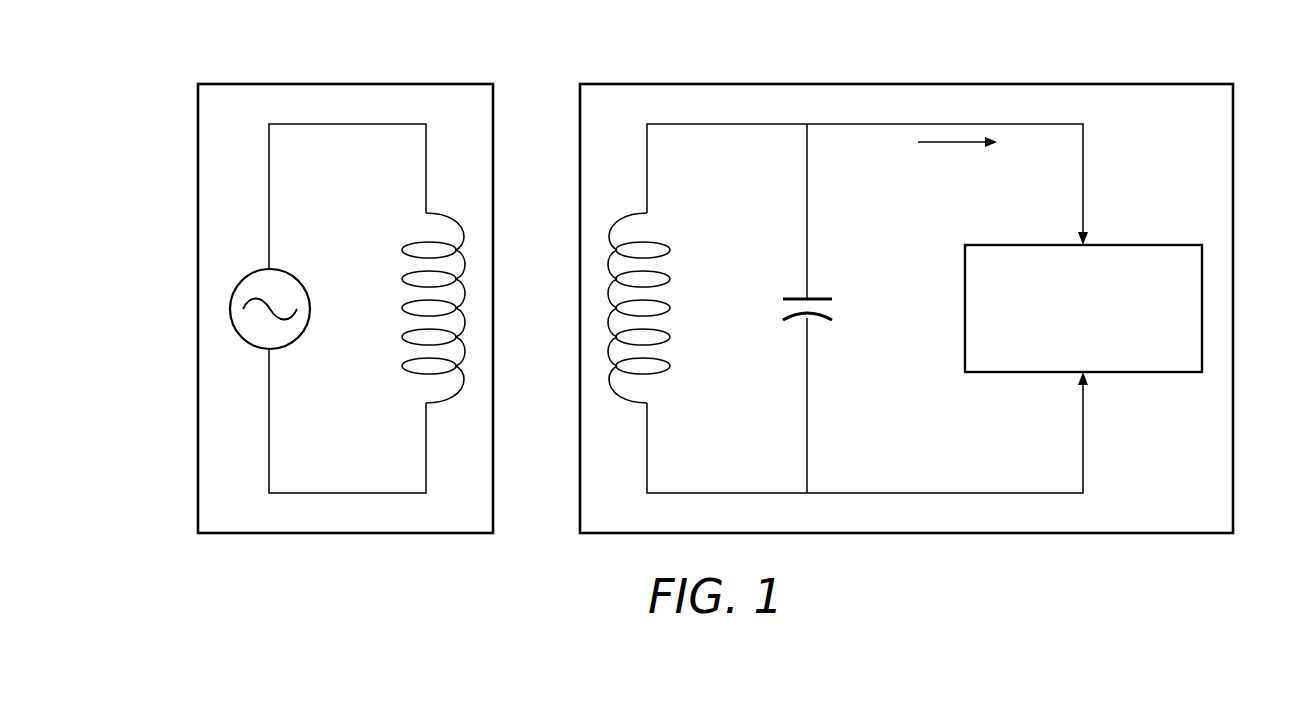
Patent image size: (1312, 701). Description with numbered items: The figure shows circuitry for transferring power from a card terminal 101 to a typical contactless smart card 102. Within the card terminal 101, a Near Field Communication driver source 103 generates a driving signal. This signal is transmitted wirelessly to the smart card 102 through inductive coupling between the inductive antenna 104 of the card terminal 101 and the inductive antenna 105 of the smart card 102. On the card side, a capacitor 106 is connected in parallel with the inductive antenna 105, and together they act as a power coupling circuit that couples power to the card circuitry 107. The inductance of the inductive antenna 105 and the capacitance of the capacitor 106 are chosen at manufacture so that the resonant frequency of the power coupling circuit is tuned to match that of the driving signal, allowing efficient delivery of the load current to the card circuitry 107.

The card terminal 101 is at (462, 84).
The contactless smart card 102 is at (1202, 84).
The Near Field Communication driver source 103 is at (230, 306).
The inductive antenna 104 is at (458, 216).
The inductive antenna 105 is at (612, 401).
The capacitor 106 is at (818, 298).
The card circuitry 107 is at (1202, 355).